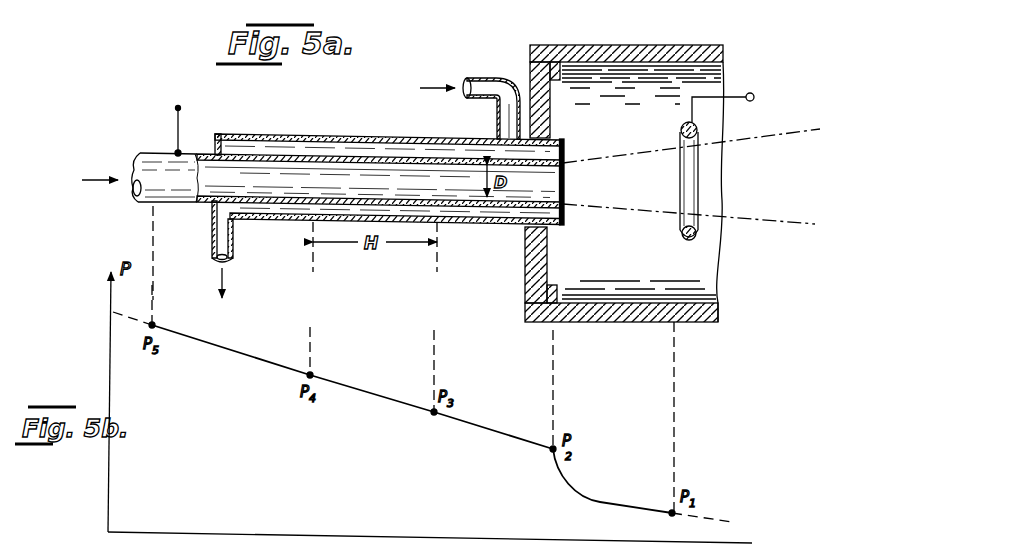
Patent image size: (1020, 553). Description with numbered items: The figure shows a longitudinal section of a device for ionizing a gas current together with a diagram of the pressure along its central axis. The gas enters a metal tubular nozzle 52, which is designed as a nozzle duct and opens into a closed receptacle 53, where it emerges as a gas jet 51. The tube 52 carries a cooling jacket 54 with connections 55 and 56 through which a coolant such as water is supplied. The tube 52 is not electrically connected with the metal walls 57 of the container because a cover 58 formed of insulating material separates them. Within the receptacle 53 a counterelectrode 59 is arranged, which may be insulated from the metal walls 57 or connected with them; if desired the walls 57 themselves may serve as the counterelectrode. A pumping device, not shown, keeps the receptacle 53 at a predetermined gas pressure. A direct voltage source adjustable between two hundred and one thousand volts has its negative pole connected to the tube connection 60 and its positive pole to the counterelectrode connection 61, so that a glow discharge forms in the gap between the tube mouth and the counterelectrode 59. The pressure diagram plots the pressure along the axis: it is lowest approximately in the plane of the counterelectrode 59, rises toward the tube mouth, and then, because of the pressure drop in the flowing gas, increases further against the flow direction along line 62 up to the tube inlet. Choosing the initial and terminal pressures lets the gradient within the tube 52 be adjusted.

In FIG. 5a, the spray pattern of liquid jet 51 is at (664, 145).
In FIG. 5a, the tubular nozzle 52 is at (154, 162).
In FIG. 5a, the closed receptacle 53 is at (626, 100).
In FIG. 5a, the cooling jacket 54 is at (252, 134).
In FIG. 5a, the coolant inlet 55 is at (487, 83).
In FIG. 5a, the coolant connection 56 is at (234, 254).
In FIG. 5a, the metal walls 57 is at (594, 46).
In FIG. 5a, the cover 58 is at (530, 256).
In FIG. 5a, the counterelectrode 59 is at (679, 233).
In FIG. 5a, the tube connection 60 is at (177, 128).
In FIG. 5a, the counterelectrode connection 61 is at (750, 93).
In FIG. 5b, the pressure line 62 is at (494, 424).